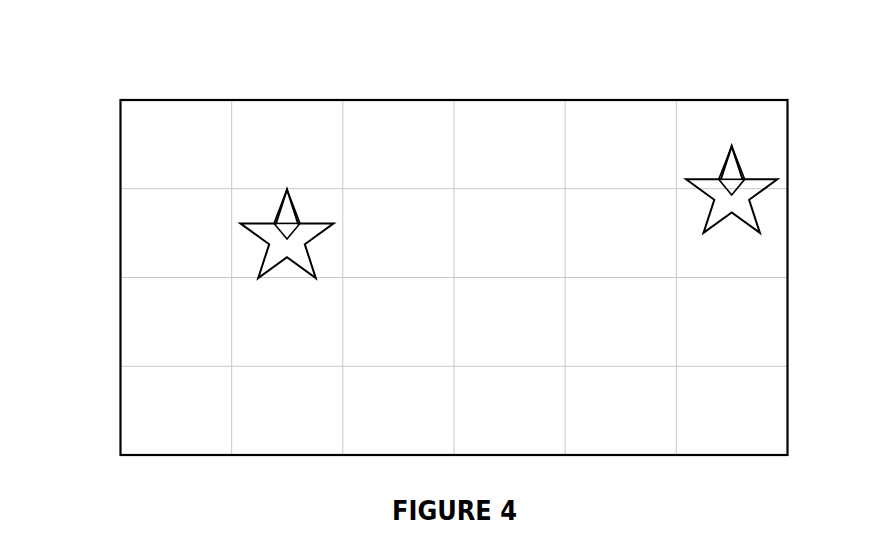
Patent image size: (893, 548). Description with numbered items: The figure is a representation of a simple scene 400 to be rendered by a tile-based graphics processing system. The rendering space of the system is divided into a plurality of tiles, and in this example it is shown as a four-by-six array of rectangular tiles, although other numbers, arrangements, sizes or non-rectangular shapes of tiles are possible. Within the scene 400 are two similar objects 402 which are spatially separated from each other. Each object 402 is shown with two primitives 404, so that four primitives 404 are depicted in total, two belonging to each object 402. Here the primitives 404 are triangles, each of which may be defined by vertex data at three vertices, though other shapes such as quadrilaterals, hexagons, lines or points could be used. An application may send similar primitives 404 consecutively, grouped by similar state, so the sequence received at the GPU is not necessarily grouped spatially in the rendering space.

The scene 400 is at (134, 79).
The object 402 is at (686, 179).
The primitive 404 is at (797, 202).